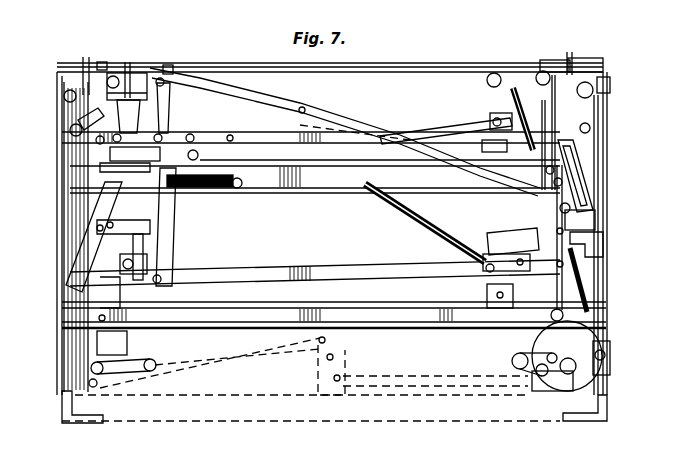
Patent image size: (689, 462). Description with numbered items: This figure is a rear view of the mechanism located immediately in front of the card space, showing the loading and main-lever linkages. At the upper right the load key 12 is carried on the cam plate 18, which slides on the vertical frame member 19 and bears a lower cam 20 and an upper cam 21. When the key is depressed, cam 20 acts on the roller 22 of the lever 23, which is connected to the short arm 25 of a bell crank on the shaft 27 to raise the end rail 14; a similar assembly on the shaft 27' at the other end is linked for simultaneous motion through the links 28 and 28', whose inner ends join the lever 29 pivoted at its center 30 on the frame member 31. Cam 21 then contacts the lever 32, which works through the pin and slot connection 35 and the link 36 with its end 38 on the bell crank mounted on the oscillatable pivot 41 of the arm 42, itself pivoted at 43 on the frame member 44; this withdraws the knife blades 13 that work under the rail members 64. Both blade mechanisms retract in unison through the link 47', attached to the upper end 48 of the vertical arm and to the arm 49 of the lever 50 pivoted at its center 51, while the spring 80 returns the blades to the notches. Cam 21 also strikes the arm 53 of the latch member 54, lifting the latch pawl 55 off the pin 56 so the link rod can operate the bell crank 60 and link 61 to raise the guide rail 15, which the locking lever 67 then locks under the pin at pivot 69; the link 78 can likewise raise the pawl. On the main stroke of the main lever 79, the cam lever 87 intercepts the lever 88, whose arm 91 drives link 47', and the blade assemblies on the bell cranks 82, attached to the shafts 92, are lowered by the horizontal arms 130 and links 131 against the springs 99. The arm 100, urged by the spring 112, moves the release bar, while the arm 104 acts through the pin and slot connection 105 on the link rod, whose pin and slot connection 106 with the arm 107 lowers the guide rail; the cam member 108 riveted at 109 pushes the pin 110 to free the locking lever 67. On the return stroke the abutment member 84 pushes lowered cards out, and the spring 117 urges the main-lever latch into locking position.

The spring 117 is at (62, 75).
The horizontal arm 130 is at (86, 90).
The knife blade 13 is at (118, 70).
The rail member 64 is at (122, 85).
The arm 91 is at (168, 70).
The shaft 92 is at (165, 80).
The bell crank 82 is at (62, 104).
The main lever 79 is at (50, 125).
The cam lever 87 is at (85, 160).
The oscillatable pivot 41 is at (110, 175).
The lever 88 is at (85, 200).
The spring 99 is at (140, 103).
The arm 42 is at (172, 140).
The pivot end 43 is at (230, 140).
The link 47' is at (298, 91).
The spring 80 is at (480, 122).
The pivot center 51 is at (510, 100).
The lever 50 is at (470, 70).
The arm 49 is at (490, 72).
The upper end 48 is at (600, 75).
The link 131 is at (605, 140).
The vertical frame member 19 is at (580, 170).
The link end 38 is at (575, 170).
The link 36 is at (590, 185).
The pin and slot connection 35 is at (593, 210).
The cam 21 is at (600, 220).
The lever 32 is at (605, 240).
The load key 12 is at (605, 255).
The arm 53 is at (598, 270).
The pivot 69 is at (585, 282).
The locking lever 67 is at (610, 295).
The cam plate 18 is at (612, 315).
The pin 110 is at (605, 325).
The cam 20 is at (600, 340).
The roller 22 is at (605, 365).
The lever 23 is at (585, 370).
The shaft 27 is at (550, 411).
The end rail 14 is at (515, 375).
The guide rail 15 is at (512, 363).
The bell crank 60 is at (530, 330).
The link 61 is at (545, 340).
The arm 107 is at (478, 290).
The pin 56 is at (482, 280).
The pin and slot connection 106 is at (445, 250).
The latch pawl 55 is at (490, 252).
The latch member 54 is at (488, 240).
The link 78 is at (522, 215).
The cam member 108 is at (530, 228).
The rivet 109 is at (520, 242).
The frame member 44 is at (440, 192).
The spring 112 is at (228, 190).
The arm 100 is at (160, 198).
The arm 104 is at (172, 245).
The pin and slot connection 105 is at (150, 290).
The abutment member 84 is at (125, 343).
The link 28' is at (202, 351).
The shaft 27' is at (53, 365).
The short arm 25 is at (90, 382).
The lever 29 is at (328, 340).
The center pivot 30 is at (338, 358).
The frame member 31 is at (320, 382).
The link 28 is at (407, 370).